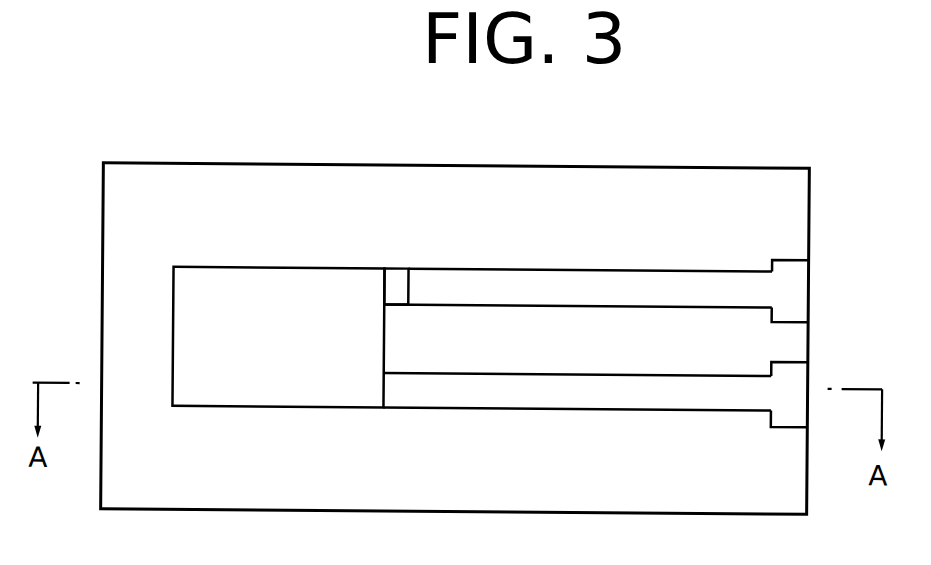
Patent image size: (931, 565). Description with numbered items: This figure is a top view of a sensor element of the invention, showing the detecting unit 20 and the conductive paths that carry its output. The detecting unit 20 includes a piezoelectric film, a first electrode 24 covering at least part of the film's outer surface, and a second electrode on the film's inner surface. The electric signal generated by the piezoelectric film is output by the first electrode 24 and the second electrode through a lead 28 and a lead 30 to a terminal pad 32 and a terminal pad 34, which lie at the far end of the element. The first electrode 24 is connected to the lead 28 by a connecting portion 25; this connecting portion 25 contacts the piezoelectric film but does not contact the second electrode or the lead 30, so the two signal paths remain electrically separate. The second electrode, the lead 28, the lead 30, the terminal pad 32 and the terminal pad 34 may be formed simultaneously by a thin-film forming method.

The detecting unit 20 is at (211, 256).
The first electrode 24 is at (290, 283).
The connecting portion 25 is at (393, 286).
The lead 28 is at (570, 284).
The lead 30 is at (582, 396).
The terminal pad 32 is at (786, 274).
The terminal pad 34 is at (794, 400).